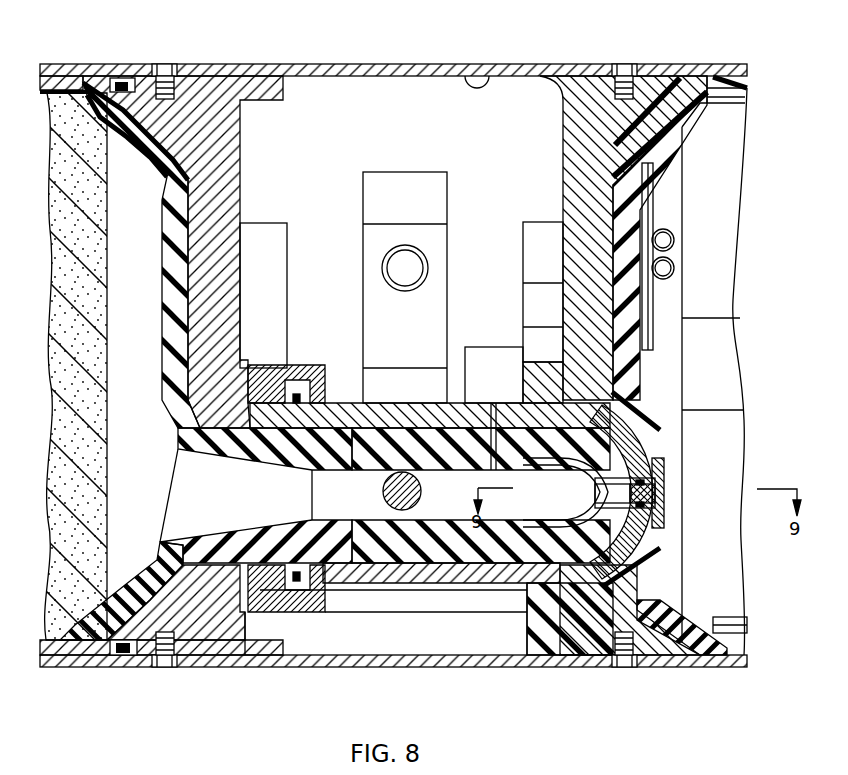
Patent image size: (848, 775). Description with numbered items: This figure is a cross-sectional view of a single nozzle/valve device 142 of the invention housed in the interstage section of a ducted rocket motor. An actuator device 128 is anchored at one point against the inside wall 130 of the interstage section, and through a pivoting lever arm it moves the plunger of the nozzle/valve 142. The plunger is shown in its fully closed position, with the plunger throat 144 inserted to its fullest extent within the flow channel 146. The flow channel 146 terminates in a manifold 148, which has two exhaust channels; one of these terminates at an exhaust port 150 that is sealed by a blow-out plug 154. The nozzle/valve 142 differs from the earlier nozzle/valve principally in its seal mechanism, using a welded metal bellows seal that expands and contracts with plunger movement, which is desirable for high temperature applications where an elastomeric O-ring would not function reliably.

The actuator device 128 is at (413, 178).
The inside wall 130 is at (473, 76).
The nozzle/valve device 142 is at (418, 596).
The plunger throat 144 is at (392, 490).
The flow channel 146 is at (208, 493).
The manifold 148 is at (509, 502).
The exhaust port 150 is at (625, 495).
The blow-out plug 154 is at (660, 478).